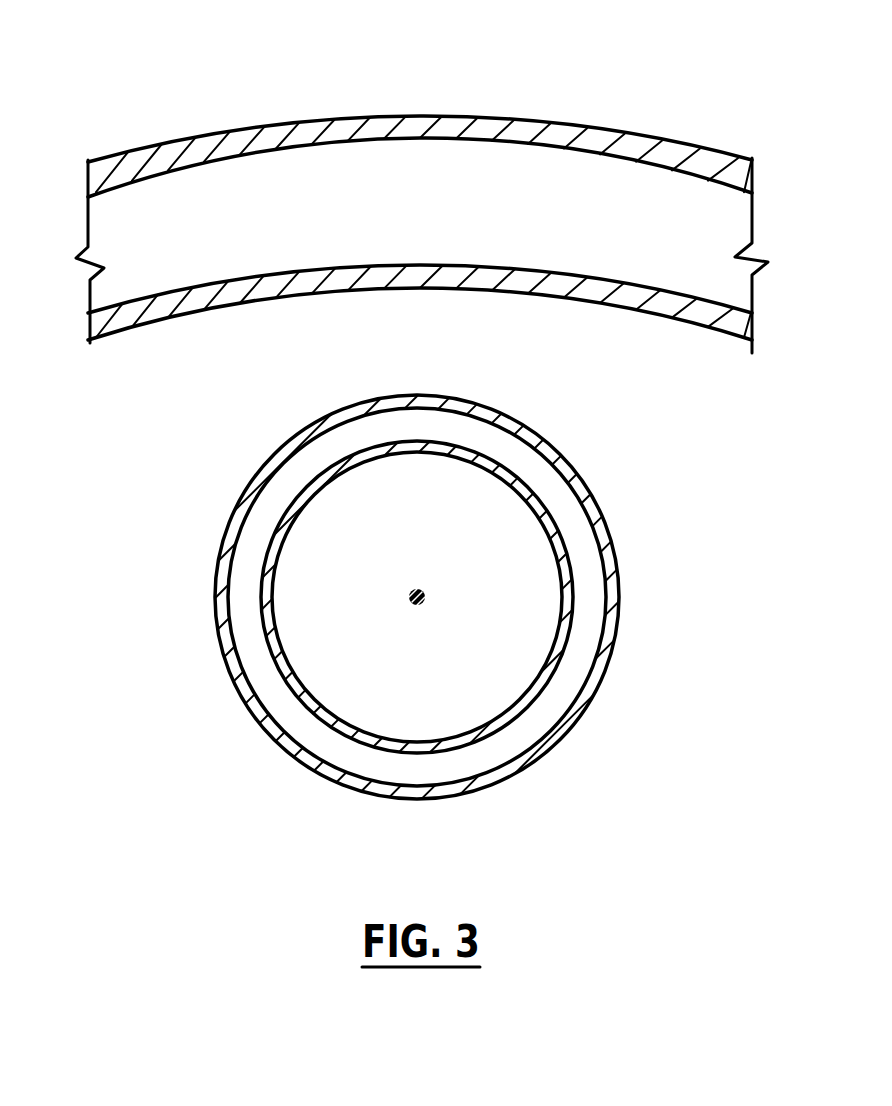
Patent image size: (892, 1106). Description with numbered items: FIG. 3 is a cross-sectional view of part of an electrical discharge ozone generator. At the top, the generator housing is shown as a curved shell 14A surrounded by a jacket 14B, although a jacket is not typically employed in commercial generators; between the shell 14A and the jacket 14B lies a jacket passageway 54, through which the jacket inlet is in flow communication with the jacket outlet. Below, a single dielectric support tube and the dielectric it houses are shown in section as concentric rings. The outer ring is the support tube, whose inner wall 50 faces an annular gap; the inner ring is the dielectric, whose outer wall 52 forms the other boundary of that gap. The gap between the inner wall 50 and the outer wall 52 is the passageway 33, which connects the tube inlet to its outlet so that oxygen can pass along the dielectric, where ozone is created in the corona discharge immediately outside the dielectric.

The shell 14A is at (443, 266).
The jacket 14B is at (480, 128).
The jacket passageway 54 is at (648, 200).
The inner wall of the support tube 50 is at (500, 443).
The outer wall of the dielectrics 52 is at (547, 497).
The passageway 33 is at (568, 517).